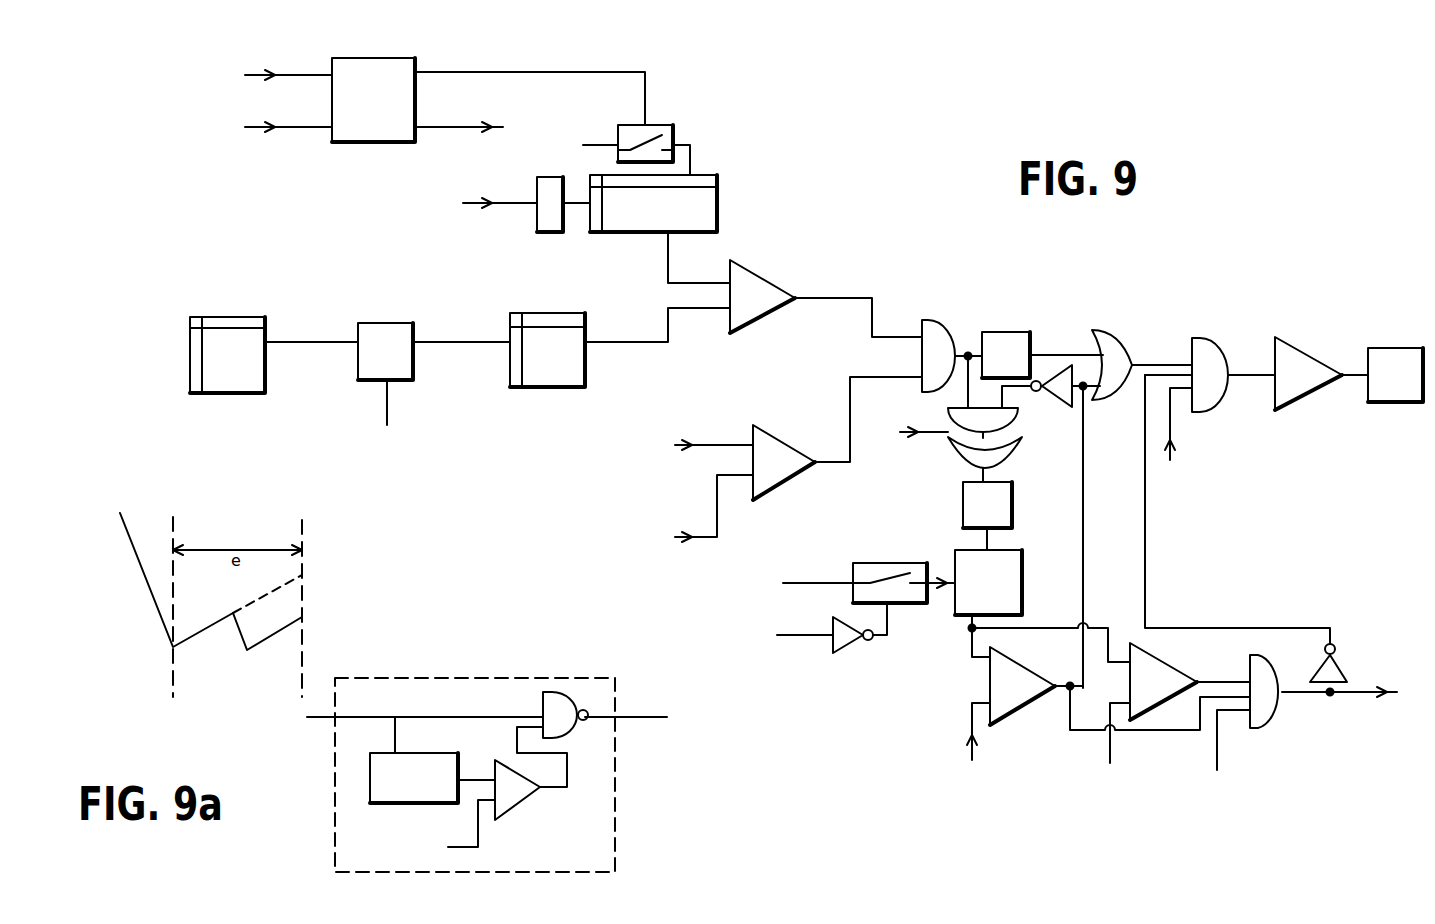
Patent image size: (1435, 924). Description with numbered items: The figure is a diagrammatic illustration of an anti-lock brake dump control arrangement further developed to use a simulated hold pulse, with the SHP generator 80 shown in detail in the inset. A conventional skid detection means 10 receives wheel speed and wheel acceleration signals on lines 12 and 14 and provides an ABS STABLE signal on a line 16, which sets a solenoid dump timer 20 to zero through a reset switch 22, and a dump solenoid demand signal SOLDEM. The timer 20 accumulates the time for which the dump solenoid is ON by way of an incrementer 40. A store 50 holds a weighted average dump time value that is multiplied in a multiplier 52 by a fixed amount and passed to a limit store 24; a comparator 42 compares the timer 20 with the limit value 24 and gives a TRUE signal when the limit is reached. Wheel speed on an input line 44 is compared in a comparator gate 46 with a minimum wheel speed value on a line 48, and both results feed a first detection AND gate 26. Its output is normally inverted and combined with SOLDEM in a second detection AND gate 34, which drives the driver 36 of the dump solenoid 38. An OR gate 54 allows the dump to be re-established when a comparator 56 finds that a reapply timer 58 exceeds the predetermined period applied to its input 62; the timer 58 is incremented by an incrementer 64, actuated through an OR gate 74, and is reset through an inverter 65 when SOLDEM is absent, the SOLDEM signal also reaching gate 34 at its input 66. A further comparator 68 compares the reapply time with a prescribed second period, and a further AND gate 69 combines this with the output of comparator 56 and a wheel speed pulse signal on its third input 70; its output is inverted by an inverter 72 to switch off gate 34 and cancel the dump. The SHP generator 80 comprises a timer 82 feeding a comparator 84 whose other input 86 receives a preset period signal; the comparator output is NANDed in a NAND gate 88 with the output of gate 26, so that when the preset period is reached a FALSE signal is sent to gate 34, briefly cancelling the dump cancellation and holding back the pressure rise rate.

In FIG. 9, the skid detection means 10 is at (372, 142).
In FIG. 9, the wheel speed signal line 12 is at (306, 75).
In FIG. 9, the wheel acceleration signal line 14 is at (305, 127).
In FIG. 9, the ABS STABLE signal line 16 is at (444, 70).
In FIG. 9, the solenoid dump timer 20 is at (717, 200).
In FIG. 9, the reset switch 22 is at (673, 142).
In FIG. 9, the limit store 24 is at (585, 364).
In FIG. 9, the first detection AND gate 26 is at (950, 336).
In FIG. 9, the second detection AND gate 34 is at (1226, 360).
In FIG. 9, the driver 36 is at (1275, 400).
In FIG. 9, the dump solenoid 38 is at (1368, 392).
In FIG. 9, the incrementer 40 is at (537, 226).
In FIG. 9, the comparator 42 is at (768, 284).
In FIG. 9, the wheel speed input line 44 is at (712, 445).
In FIG. 9, the comparator gate 46 is at (792, 452).
In FIG. 9, the minimum wheel speed input line 48 is at (717, 514).
In FIG. 9, the store 50 is at (265, 370).
In FIG. 9, the multiplier 52 is at (413, 366).
In FIG. 9, the OR gate 54 is at (1128, 352).
In FIG. 9, the comparator 56 is at (1032, 702).
In FIG. 9, the reapply timer 58 is at (1022, 590).
In FIG. 9, the predetermined period input 62 is at (972, 716).
In FIG. 9, the incrementer 64 is at (1012, 502).
In FIG. 9, the inverter 65 is at (856, 648).
In FIG. 9, the SOLDEM input 66 is at (1170, 426).
In FIG. 9, the further comparator 68 is at (1176, 678).
In FIG. 9, the further AND gate 69 is at (1282, 706).
In FIG. 9, the wheel speed pulse input 70 is at (1217, 746).
In FIG. 9, the inverter 72 is at (1347, 664).
In FIG. 9, the OR gate 74 is at (1018, 446).
In FIG. 9, the SHP generator 80 is at (1034, 342).
In FIG. 9a, the SHP generator 80 is at (436, 682).
In FIG. 9a, the timer 82 is at (460, 756).
In FIG. 9a, the comparator 84 is at (530, 800).
In FIG. 9a, the preset period input 86 is at (478, 830).
In FIG. 9a, the NAND gate 88 is at (576, 724).